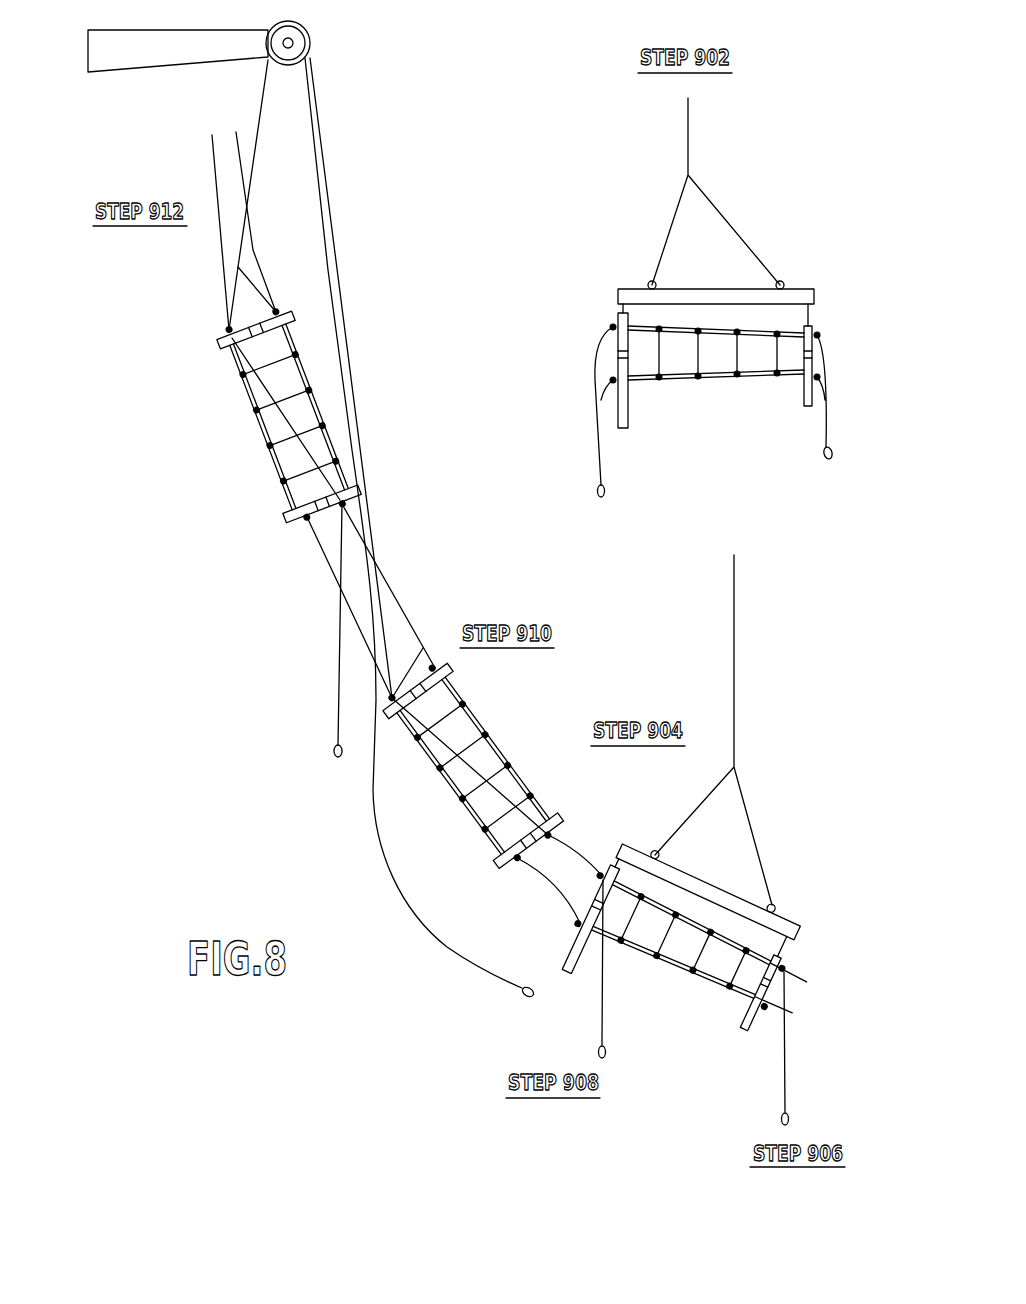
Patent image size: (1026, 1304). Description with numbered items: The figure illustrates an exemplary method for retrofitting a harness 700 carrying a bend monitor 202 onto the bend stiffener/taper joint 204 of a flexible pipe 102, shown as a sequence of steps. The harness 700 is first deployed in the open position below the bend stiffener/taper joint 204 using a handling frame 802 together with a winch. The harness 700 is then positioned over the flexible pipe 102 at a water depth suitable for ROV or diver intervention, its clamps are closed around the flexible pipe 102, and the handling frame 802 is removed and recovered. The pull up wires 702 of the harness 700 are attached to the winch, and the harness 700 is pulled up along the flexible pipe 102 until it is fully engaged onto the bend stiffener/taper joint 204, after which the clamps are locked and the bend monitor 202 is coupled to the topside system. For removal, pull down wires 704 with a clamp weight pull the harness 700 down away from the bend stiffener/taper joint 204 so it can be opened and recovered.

The flexible pipe 102 is at (350, 594).
The bend monitor 202 is at (222, 373).
The bend stiffener/taper joint 204 is at (297, 455).
The harness 700 is at (227, 424).
The pull up wires 702 is at (225, 307).
The pull down wires 704 is at (332, 721).
The handling frame 802 is at (336, 103).